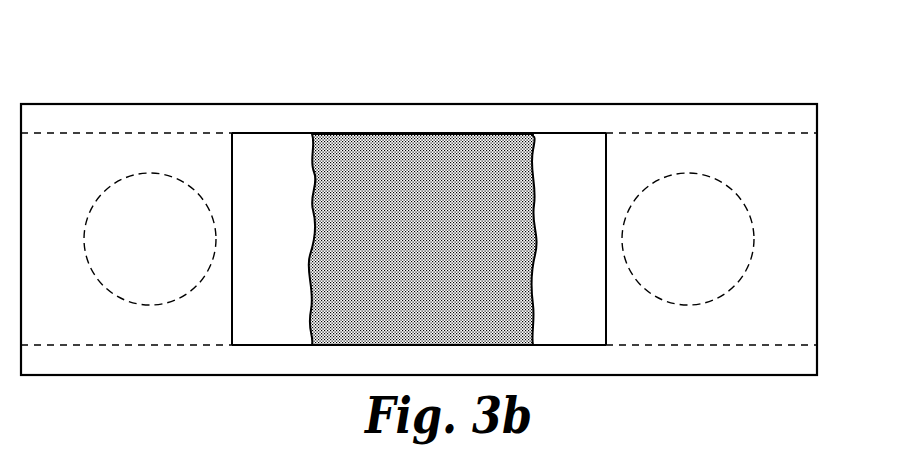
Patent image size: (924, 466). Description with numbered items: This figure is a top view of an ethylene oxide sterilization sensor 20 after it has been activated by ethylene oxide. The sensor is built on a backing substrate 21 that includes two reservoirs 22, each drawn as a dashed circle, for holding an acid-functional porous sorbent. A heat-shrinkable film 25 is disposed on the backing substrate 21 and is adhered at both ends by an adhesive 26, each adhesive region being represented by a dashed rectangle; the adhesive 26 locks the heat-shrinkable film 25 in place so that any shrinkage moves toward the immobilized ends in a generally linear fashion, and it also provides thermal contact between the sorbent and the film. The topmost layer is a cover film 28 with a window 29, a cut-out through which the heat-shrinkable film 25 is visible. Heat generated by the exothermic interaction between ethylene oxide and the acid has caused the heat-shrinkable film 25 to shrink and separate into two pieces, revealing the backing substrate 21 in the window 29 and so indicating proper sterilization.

The EO sterilization sensor 20 is at (832, 66).
The backing substrate 21 is at (477, 148).
The reservoirs 22 is at (167, 303).
The heat-shrinkable film 25 is at (273, 142).
The adhesive 26 is at (133, 135).
The cover film 28 is at (665, 117).
The window 29 is at (413, 133).